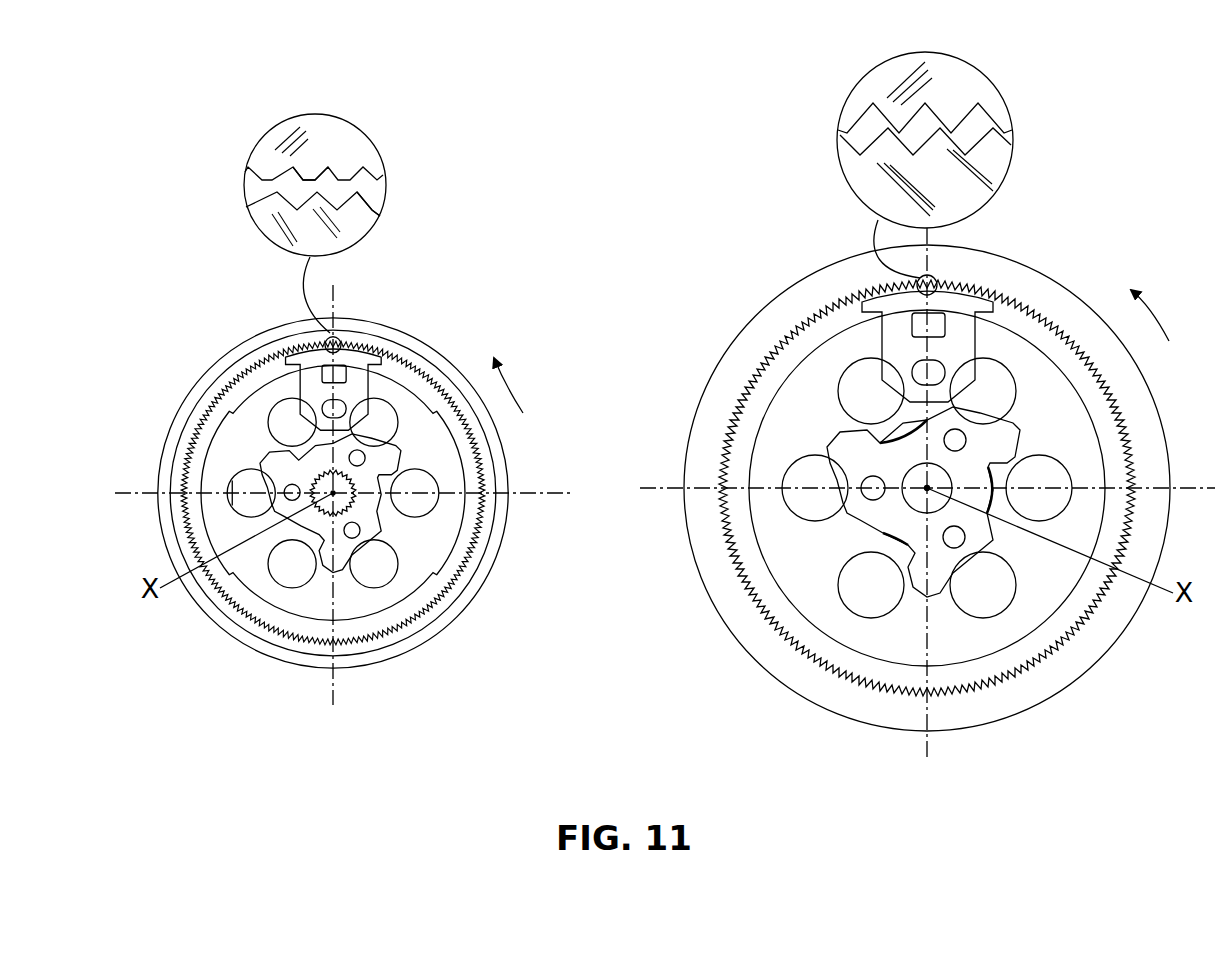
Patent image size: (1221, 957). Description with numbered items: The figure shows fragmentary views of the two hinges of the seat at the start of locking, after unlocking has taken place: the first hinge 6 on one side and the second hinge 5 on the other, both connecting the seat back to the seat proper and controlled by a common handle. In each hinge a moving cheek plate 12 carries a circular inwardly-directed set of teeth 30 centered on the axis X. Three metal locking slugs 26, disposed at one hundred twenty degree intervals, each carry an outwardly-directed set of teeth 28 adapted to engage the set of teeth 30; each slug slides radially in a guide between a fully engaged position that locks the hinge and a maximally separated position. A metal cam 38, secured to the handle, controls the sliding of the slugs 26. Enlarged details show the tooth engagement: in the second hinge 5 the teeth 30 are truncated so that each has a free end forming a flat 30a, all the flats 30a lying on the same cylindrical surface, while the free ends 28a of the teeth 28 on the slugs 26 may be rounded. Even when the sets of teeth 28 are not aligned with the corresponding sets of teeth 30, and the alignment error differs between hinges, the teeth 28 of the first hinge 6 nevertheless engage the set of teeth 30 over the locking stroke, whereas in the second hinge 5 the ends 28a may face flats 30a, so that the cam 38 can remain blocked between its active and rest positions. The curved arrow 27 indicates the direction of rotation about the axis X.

The second hinge 5 is at (230, 345).
The first hinge 6 is at (806, 276).
The moving cheek plate 12 is at (327, 132).
The locking slug 26 is at (347, 237).
The rotation direction 27 is at (513, 387).
The set of teeth 28 is at (285, 200).
The free end 28a is at (372, 210).
The set of teeth 30 is at (283, 170).
The flat 30a is at (318, 175).
The cam 38 is at (1182, 397).